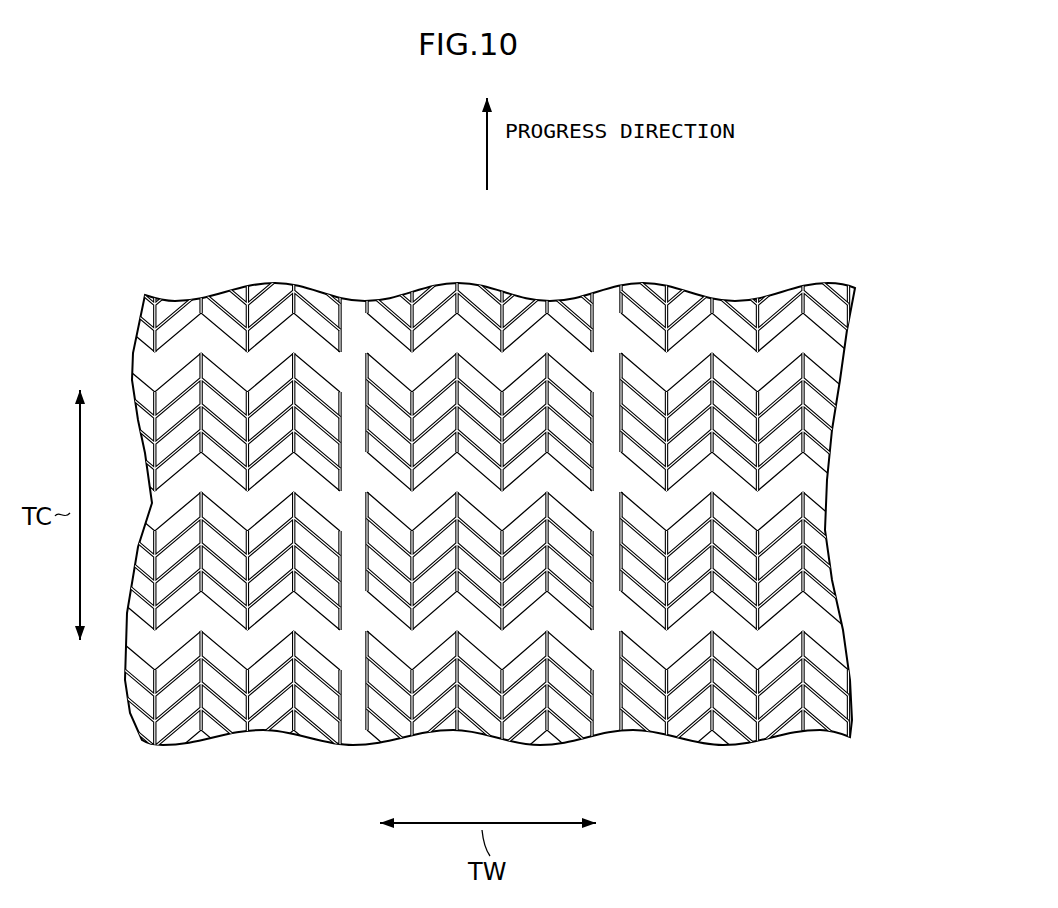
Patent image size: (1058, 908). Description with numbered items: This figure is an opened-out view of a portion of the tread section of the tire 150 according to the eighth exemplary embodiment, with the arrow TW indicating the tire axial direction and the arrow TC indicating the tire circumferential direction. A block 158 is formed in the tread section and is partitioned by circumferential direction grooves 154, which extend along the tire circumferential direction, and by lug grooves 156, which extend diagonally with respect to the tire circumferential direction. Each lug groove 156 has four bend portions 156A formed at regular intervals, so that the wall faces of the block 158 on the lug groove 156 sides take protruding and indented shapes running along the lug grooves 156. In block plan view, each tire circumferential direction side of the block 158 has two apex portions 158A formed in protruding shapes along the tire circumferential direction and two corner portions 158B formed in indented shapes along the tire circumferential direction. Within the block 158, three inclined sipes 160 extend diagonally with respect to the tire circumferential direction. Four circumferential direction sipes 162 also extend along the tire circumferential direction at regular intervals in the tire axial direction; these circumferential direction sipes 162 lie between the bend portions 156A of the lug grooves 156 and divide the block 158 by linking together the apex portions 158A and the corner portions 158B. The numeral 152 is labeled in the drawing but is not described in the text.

The tire 150 is at (245, 238).
The tread 152 is at (810, 288).
The circumferential direction groove 154 is at (604, 300).
The lug groove 156 is at (368, 338).
The bend portion 156A is at (666, 368).
The block 158 is at (356, 358).
The apex portion 158A is at (420, 350).
The corner portion 158B is at (398, 348).
The inclined sipe 160 is at (564, 355).
The circumferential direction sipe 162 is at (762, 420).